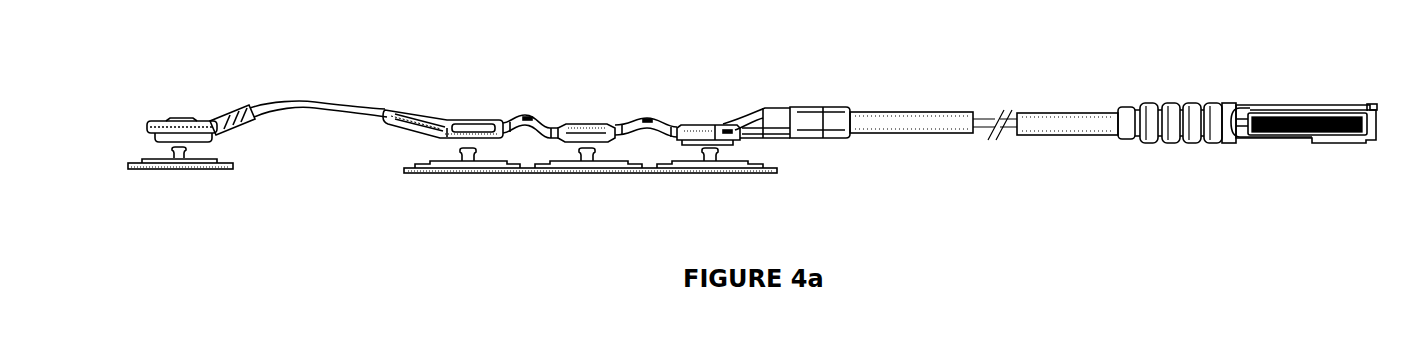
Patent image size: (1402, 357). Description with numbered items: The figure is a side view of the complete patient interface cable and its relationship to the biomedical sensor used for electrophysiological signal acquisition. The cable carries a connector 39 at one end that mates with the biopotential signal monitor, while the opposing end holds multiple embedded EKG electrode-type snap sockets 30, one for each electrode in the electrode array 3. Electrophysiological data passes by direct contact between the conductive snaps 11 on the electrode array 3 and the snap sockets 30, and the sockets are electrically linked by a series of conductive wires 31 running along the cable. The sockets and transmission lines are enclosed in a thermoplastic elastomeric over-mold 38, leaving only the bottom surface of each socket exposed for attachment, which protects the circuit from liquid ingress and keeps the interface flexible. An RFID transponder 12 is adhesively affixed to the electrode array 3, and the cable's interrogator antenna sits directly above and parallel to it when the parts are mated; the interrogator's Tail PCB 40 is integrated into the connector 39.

The snap socket 30 is at (157, 147).
The over-mold 38 is at (763, 105).
The conductive wires 31 is at (978, 126).
The connector 39 is at (1299, 119).
The Tail PCB 40 is at (1333, 138).
The electrode array 3 is at (557, 188).
The RFID transponder 12 is at (480, 168).
The conductive snaps 11 is at (410, 154).